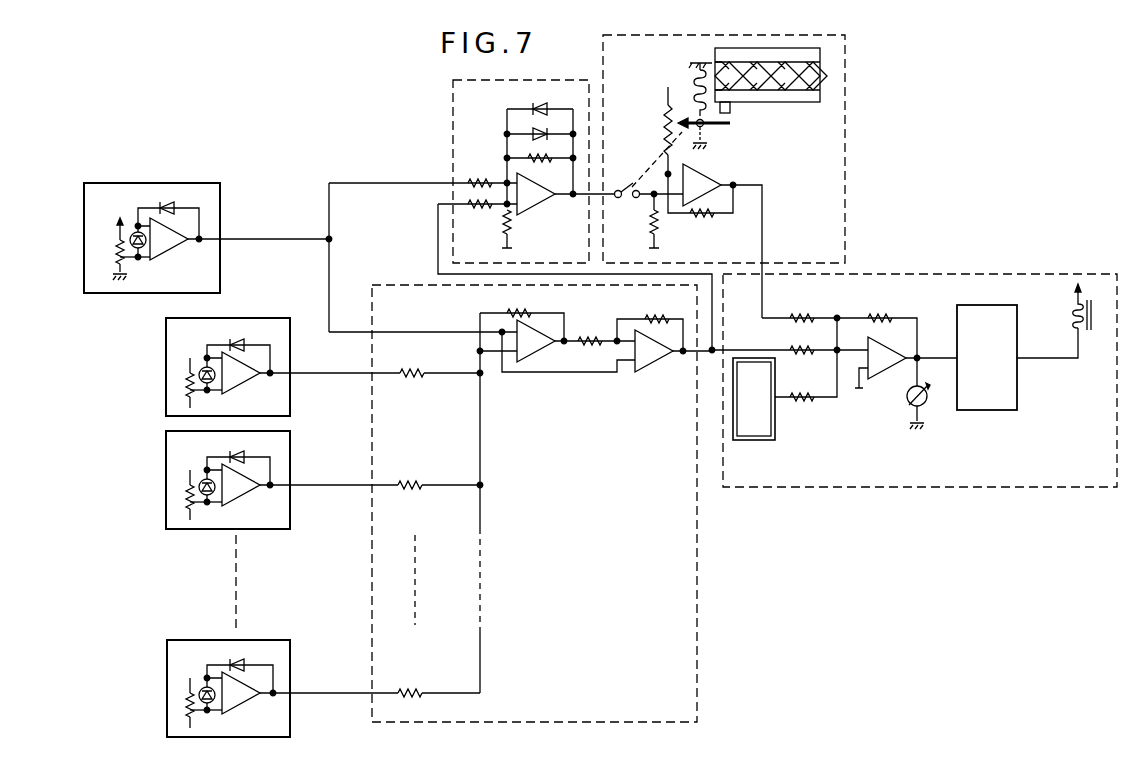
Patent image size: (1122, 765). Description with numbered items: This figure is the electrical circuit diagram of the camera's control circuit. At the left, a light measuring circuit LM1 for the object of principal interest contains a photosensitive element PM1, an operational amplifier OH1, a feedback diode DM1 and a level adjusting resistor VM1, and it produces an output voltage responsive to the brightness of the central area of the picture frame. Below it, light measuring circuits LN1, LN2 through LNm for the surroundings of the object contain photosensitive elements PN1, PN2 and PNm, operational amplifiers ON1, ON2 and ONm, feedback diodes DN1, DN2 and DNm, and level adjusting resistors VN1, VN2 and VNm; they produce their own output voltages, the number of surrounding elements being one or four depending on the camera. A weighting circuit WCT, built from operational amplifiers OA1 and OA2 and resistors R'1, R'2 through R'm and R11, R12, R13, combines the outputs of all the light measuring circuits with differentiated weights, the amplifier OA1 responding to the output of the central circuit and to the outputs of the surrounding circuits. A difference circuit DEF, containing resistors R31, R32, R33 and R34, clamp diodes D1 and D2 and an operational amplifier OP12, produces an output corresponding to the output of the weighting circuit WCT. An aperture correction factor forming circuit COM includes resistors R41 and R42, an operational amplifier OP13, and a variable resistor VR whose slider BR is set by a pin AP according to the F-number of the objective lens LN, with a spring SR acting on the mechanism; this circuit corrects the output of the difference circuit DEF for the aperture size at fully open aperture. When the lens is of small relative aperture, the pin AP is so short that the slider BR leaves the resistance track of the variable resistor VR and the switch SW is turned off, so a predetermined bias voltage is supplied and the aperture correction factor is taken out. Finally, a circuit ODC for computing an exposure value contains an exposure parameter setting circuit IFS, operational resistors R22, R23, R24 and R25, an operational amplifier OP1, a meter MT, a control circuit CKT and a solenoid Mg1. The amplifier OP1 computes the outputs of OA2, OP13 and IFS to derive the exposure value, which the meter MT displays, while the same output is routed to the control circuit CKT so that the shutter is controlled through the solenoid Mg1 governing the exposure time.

The light measuring circuit LM1 is at (84, 215).
The feedback diode DM1 is at (170, 202).
The level adjusting resistor VM1 is at (116, 260).
The photosensitive element PM1 is at (150, 256).
The operational amplifier OH1 is at (175, 252).
The light measuring circuit LN1 is at (166, 360).
The feedback diode DN1 is at (240, 337).
The photosensitive element PN1 is at (202, 366).
The level adjusting resistor VN1 is at (190, 392).
The operational amplifier ON1 is at (244, 380).
The light measuring circuit LN2 is at (166, 472).
The feedback diode DN2 is at (246, 456).
The photosensitive element PN2 is at (202, 478).
The level adjusting resistor VN2 is at (190, 504).
The operational amplifier ON2 is at (244, 492).
The light measuring circuit LNm is at (167, 681).
The feedback diode DNm is at (242, 658).
The photosensitive element PNm is at (202, 686).
The level adjusting resistor VNm is at (190, 712).
The operational amplifier ONm is at (244, 700).
The weighting circuit WCT is at (697, 648).
The resistor R'1 is at (440, 362).
The resistor R'2 is at (439, 467).
The resistor R'm is at (439, 675).
The resistor R11 is at (505, 313).
The resistor R12 is at (590, 337).
The resistor R13 is at (656, 315).
The operational amplifier OA1 is at (543, 365).
The operational amplifier OA2 is at (658, 364).
The difference circuit DEF is at (453, 142).
The clamp diode D1 is at (541, 104).
The clamp diode D2 is at (535, 132).
The resistor R31 is at (480, 177).
The resistor R32 is at (480, 216).
The resistor R33 is at (515, 230).
The resistor R34 is at (540, 162).
The operational amplifier OP12 is at (541, 204).
The aperture correction factor forming circuit COM is at (846, 172).
The switch SW is at (622, 189).
The resistor R41 is at (652, 228).
The variable resistor VR is at (660, 128).
The slider BR is at (724, 126).
The spring SR is at (696, 86).
The lens LN is at (804, 103).
The pin AP is at (732, 110).
The operational amplifier OP13 is at (717, 177).
The resistor R42 is at (706, 218).
The circuit for computing an exposure value ODC is at (876, 488).
The operational resistor R22 is at (802, 314).
The operational resistor R23 is at (802, 354).
The operational resistor R24 is at (804, 402).
The operational resistor R25 is at (880, 314).
The exposure parameter setting circuit IFS is at (754, 399).
The operational amplifier OP1 is at (880, 366).
The meter MT is at (908, 403).
The control circuit CKT is at (987, 357).
The solenoid Mg1 is at (1076, 328).